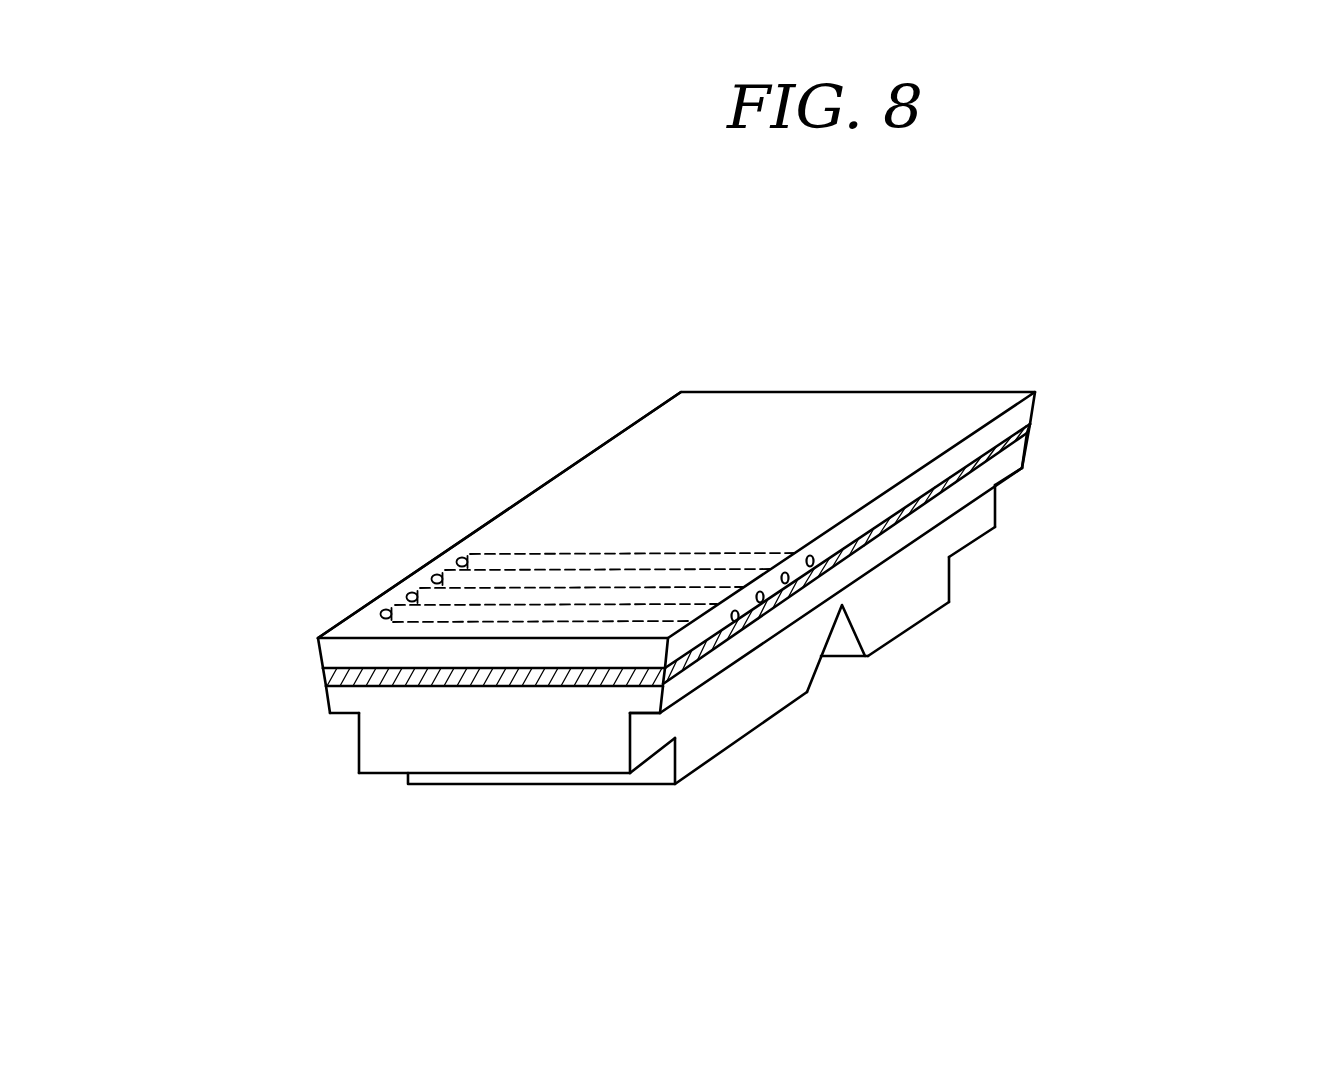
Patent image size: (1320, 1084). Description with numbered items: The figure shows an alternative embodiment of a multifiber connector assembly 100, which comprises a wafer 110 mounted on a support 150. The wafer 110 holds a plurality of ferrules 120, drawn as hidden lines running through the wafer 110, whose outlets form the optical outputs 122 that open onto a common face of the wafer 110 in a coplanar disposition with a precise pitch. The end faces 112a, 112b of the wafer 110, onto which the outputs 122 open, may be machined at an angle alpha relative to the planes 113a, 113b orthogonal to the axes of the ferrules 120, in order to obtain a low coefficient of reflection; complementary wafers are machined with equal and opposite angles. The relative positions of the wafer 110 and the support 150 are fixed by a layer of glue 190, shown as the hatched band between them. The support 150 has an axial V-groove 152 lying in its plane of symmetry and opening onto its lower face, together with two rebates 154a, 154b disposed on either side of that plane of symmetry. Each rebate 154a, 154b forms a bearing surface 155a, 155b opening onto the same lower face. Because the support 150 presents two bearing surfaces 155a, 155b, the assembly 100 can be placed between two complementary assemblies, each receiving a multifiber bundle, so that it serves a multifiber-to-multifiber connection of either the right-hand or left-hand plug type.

The assembly 100 is at (683, 368).
The wafer 110 is at (842, 405).
The face of the wafer 112a is at (1050, 403).
The face of the wafer 112b is at (440, 525).
The plane orthogonal to the ferrule axes 113a is at (648, 730).
The plane orthogonal to the ferrule axes 113b is at (347, 720).
The ferrules 120 is at (735, 618).
The optical outputs 122 is at (825, 563).
The support 150 is at (970, 530).
The V-groove 152 is at (842, 642).
The rebate 154a is at (1005, 530).
The rebate 154b is at (654, 790).
The bearing surface 155a is at (960, 550).
The bearing surface 155b is at (645, 762).
The layer of glue 190 is at (460, 678).